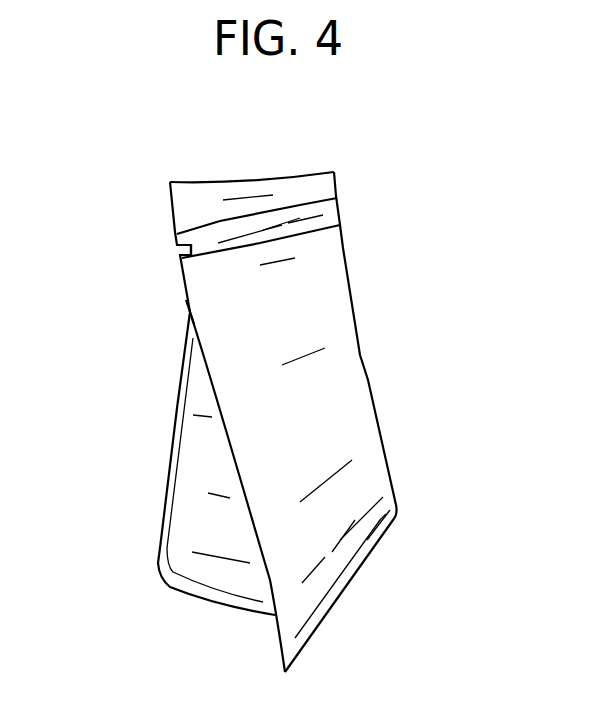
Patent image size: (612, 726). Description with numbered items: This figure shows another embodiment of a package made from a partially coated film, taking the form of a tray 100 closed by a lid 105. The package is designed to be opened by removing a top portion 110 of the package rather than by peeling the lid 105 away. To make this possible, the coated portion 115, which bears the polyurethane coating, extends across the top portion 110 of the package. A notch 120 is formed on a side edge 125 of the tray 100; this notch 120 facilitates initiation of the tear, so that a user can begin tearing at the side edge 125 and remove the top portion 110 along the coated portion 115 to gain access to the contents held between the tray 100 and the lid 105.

The tray 100 is at (192, 493).
The lid 105 is at (350, 435).
The top portion 110 is at (243, 220).
The coated portion 115 is at (287, 227).
The notch 120 is at (180, 248).
The side edge 125 is at (174, 313).